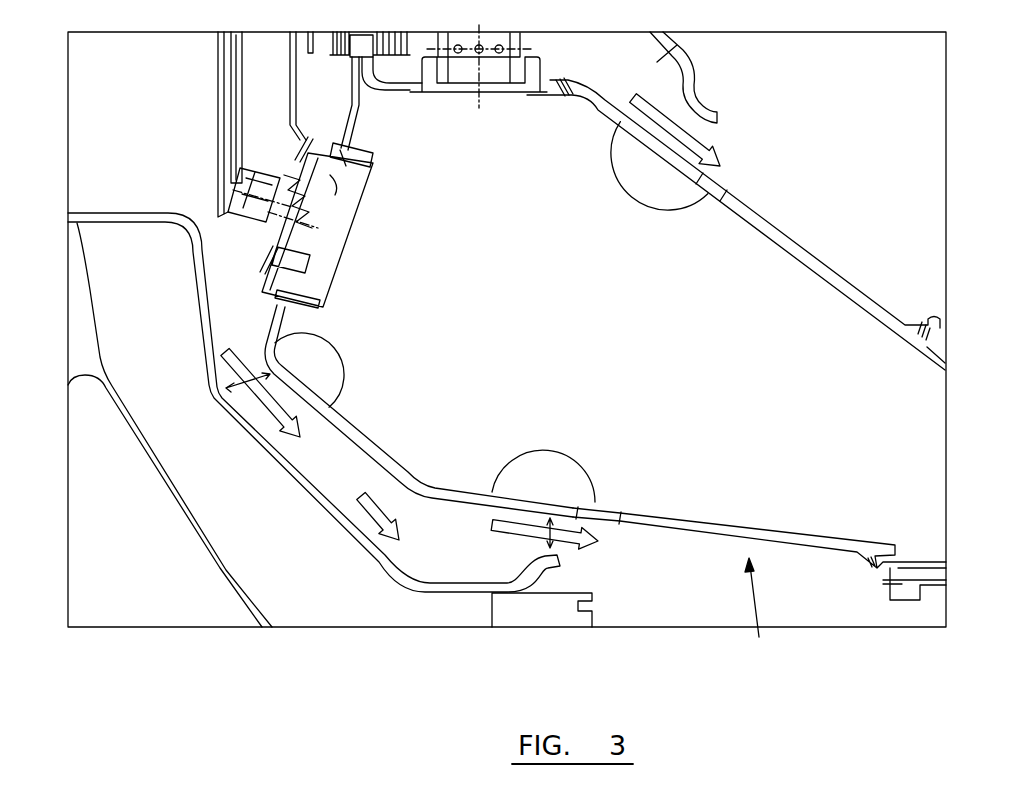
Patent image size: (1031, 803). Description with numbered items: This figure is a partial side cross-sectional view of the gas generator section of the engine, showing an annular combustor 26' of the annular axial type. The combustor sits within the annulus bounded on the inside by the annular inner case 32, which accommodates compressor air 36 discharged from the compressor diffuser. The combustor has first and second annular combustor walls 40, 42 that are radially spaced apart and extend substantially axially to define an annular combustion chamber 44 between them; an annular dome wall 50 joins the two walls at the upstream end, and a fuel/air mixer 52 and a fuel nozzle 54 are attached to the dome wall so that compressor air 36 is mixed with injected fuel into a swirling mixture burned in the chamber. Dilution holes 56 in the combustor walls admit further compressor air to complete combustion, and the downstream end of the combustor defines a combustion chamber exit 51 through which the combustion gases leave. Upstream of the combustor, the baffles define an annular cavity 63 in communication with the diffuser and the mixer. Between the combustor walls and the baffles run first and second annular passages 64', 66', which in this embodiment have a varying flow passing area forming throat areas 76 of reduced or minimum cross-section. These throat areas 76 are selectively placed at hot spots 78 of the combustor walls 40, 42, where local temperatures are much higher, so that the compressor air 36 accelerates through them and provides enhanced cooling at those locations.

The annular combustor 26' is at (765, 615).
The annular inner case 32 is at (138, 453).
The compressor air 36 is at (244, 378).
The first annular combustor wall 40 is at (800, 247).
The second annular combustor wall 42 is at (682, 530).
The annular combustion chamber 44 is at (606, 310).
The annular dome wall 50 is at (200, 288).
The combustion chamber exit 51 is at (906, 491).
The fuel/air mixer 52 is at (265, 225).
The fuel nozzle 54 is at (236, 60).
The dilution holes 56 is at (723, 187).
The annular cavity 63 is at (196, 143).
The first annular passage 64' is at (704, 77).
The second annular passage 66' is at (419, 430).
The throat areas 76 is at (703, 132).
The hot spots 78 is at (320, 377).